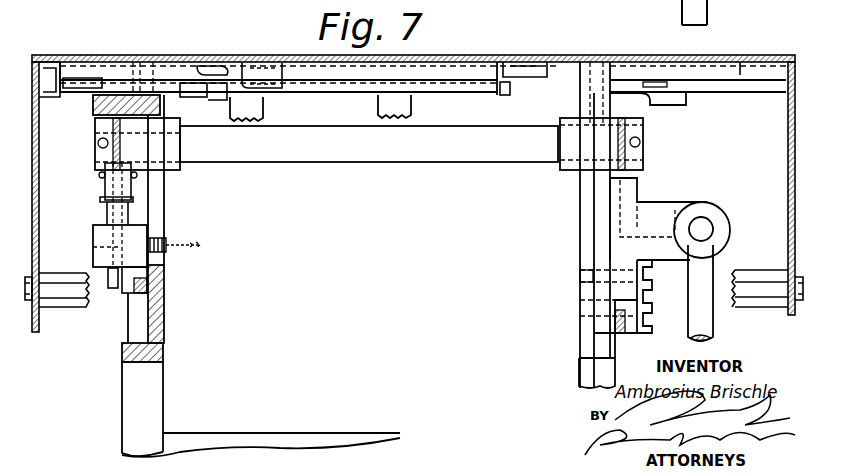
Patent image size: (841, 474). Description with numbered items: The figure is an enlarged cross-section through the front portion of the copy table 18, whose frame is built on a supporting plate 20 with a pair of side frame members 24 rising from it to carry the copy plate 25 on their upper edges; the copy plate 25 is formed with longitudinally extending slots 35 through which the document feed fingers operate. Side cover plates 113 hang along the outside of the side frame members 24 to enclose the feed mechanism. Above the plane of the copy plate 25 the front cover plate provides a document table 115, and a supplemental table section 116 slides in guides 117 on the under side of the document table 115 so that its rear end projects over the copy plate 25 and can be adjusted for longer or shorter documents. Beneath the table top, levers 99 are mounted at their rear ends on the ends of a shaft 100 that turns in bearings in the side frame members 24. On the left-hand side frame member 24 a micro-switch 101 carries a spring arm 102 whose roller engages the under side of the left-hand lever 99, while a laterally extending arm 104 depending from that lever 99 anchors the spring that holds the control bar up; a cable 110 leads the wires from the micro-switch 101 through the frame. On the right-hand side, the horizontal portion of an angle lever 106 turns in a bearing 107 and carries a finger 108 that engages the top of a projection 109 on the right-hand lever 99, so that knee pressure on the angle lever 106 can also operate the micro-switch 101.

The copy table 18 is at (563, 58).
The supporting plate 20 is at (261, 445).
The side frame members 24 is at (160, 207).
The copy plate 25 is at (222, 90).
The longitudinally extending slots 35 is at (200, 93).
The lever 99 is at (99, 141).
The shaft 100 is at (369, 144).
The micro-switch 101 is at (93, 240).
The spring arm 102 is at (106, 213).
The laterally extending arm 104 is at (94, 248).
The angle lever 106 is at (718, 278).
The bearing 107 is at (703, 208).
The finger 108 is at (646, 203).
The projection 109 is at (640, 262).
The cable 110 is at (170, 240).
The side cover plates 113 is at (52, 168).
The document table 115 is at (726, 56).
The supplemental table section 116 is at (246, 68).
The guides 117 is at (213, 70).